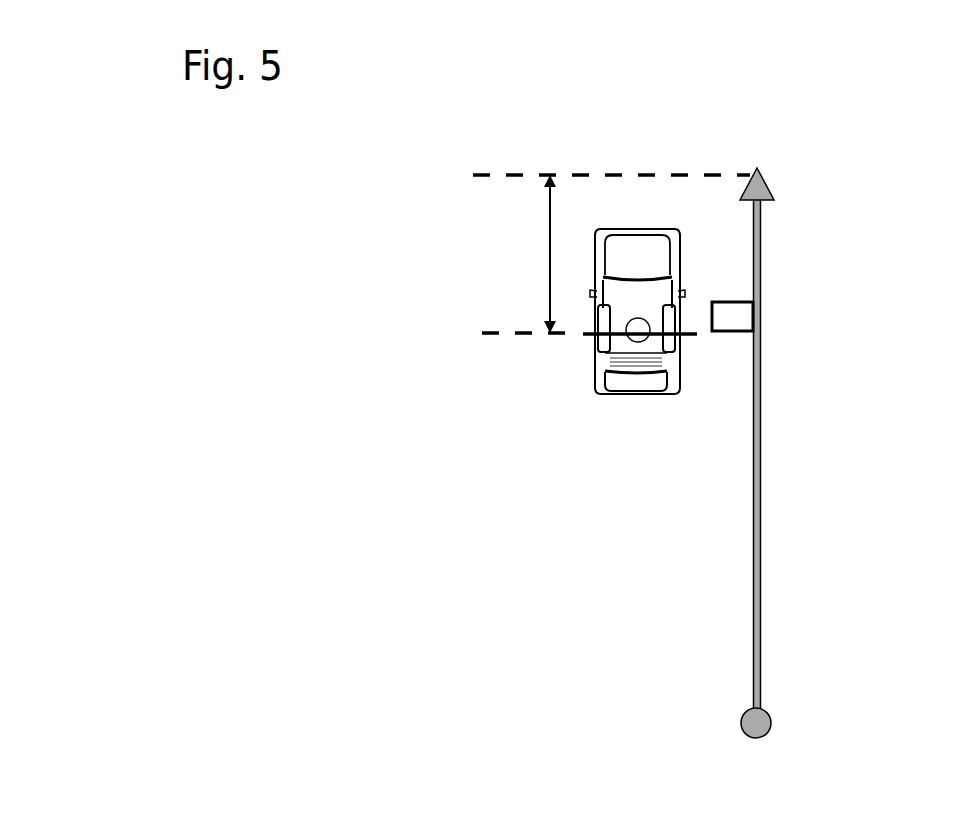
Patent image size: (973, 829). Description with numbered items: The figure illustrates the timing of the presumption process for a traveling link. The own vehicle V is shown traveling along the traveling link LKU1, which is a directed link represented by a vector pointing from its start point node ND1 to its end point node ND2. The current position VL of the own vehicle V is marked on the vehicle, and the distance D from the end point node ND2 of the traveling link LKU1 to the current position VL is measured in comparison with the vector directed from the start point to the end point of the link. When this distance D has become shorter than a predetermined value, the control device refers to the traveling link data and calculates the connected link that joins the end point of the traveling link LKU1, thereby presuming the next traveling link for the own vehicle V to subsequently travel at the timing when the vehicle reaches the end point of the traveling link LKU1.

The own vehicle V is at (643, 392).
The current position VL is at (587, 333).
The distance D is at (531, 254).
The traveling link LKU1 is at (758, 408).
The start point node ND1 is at (847, 723).
The end point node ND2 is at (847, 189).